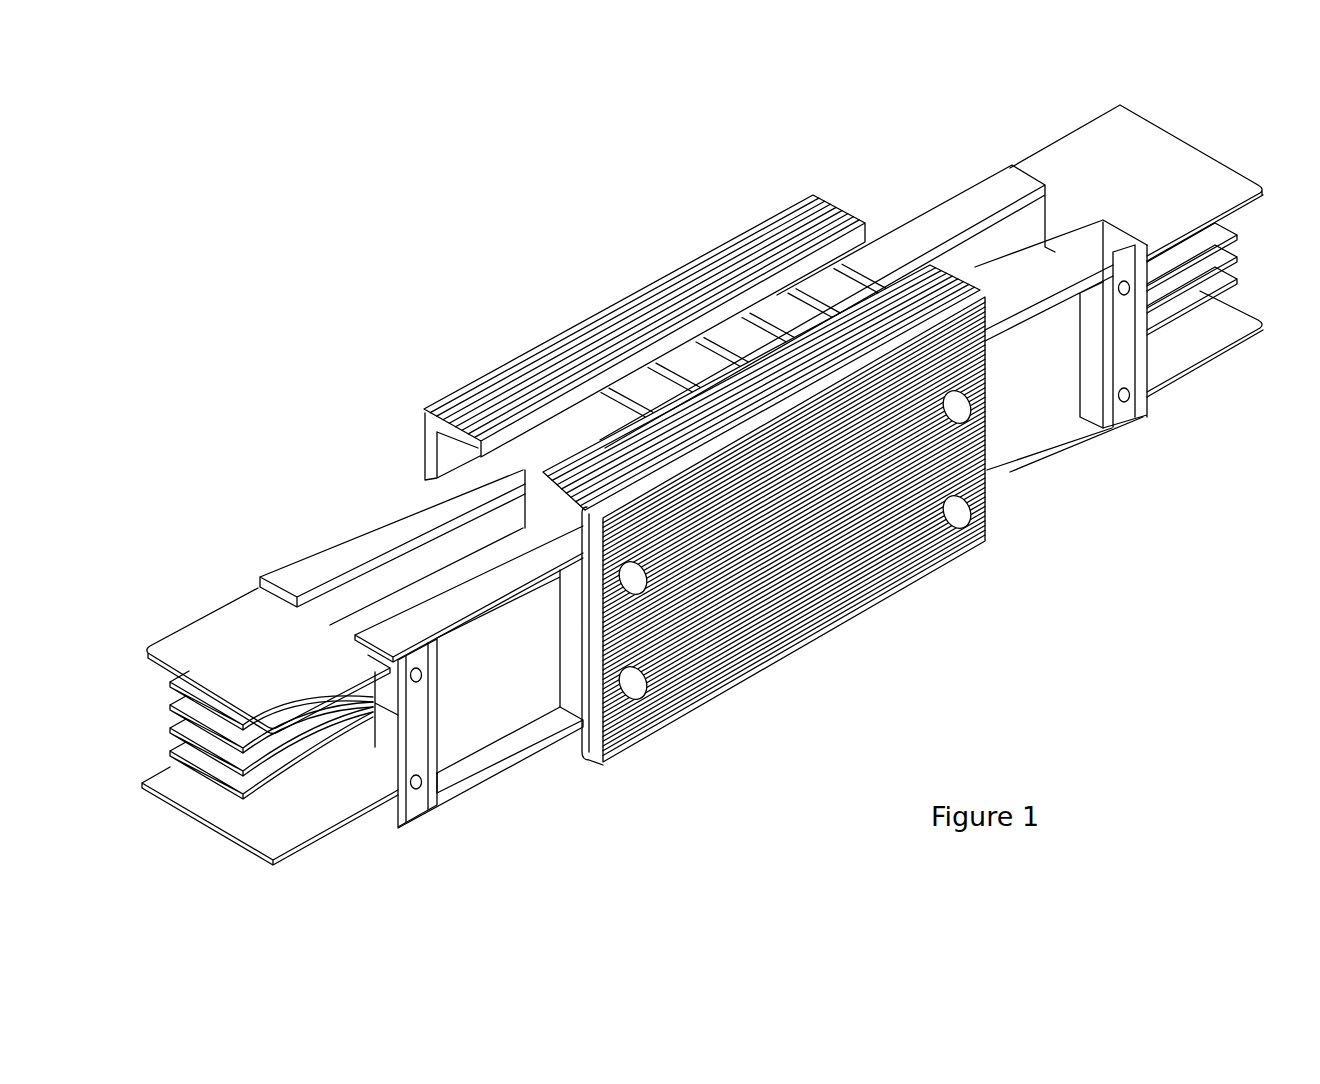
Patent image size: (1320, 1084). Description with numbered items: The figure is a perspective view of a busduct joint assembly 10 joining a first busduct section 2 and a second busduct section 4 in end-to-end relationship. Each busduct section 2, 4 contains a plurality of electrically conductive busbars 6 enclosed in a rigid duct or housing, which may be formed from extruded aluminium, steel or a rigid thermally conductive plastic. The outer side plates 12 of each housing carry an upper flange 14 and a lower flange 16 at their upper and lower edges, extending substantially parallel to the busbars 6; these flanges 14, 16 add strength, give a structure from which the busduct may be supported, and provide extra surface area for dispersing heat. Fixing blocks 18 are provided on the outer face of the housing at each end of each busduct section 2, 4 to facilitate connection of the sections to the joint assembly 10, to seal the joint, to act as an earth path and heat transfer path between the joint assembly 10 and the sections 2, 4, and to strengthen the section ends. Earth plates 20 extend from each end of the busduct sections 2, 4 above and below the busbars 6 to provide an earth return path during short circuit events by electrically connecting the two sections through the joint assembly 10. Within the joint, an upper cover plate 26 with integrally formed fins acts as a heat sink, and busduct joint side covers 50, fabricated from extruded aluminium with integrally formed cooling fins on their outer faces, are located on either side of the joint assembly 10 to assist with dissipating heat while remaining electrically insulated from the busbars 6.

The first busduct section 2 is at (456, 825).
The second busduct section 4 is at (1086, 484).
The busbars 6 is at (205, 770).
The busduct joint assembly 10 is at (824, 682).
The outer side plates 12 is at (500, 712).
The upper flange 14 is at (355, 540).
The lower flange 16 is at (487, 778).
The fixing blocks 18 is at (410, 728).
The earth plates 20 is at (1112, 150).
The upper cover plate 26 is at (708, 365).
The busduct joint side covers 50 is at (425, 452).